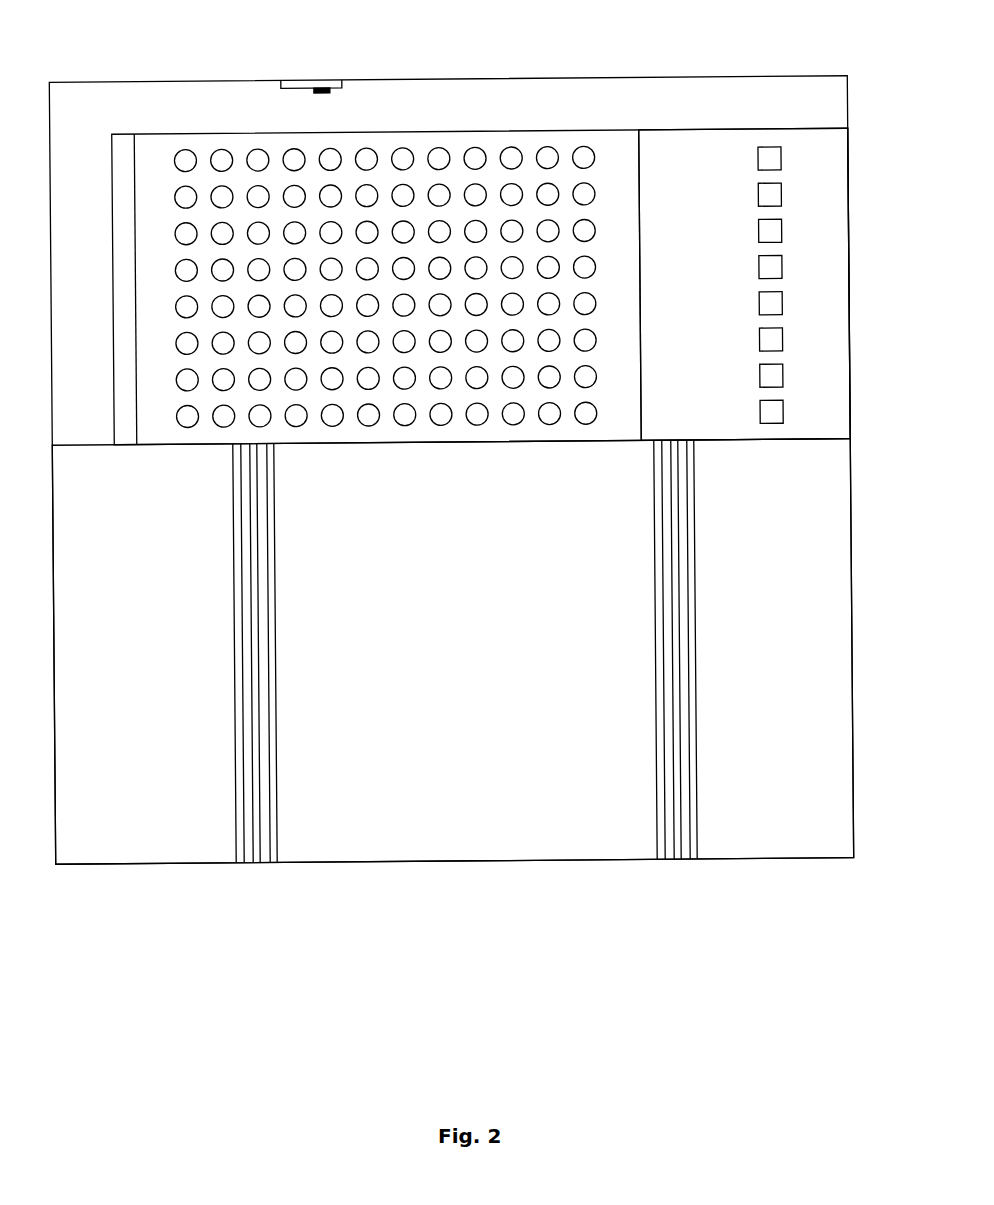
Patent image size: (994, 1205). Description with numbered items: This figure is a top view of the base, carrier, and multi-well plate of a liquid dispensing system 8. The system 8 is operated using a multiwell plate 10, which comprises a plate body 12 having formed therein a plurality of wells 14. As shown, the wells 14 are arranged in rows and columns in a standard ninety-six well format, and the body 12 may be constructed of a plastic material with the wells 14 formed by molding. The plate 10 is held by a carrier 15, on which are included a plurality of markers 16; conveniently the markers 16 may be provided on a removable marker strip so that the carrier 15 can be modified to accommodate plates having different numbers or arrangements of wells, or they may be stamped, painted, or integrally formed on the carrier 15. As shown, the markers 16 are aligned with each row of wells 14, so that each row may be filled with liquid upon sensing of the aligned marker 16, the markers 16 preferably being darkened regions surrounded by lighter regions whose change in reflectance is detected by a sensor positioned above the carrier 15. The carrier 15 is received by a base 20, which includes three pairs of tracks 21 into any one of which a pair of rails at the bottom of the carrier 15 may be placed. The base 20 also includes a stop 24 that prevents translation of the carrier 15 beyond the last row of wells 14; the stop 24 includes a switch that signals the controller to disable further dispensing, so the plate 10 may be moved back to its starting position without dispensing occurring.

The liquid dispensing system 8 is at (578, 62).
The multiwell plate 10 is at (490, 130).
The plate body 12 is at (625, 146).
The wells 14 is at (224, 158).
The carrier 15 is at (728, 432).
The markers 16 is at (772, 198).
The base 20 is at (772, 841).
The tracks 21 is at (240, 865).
The stop 24 is at (298, 87).